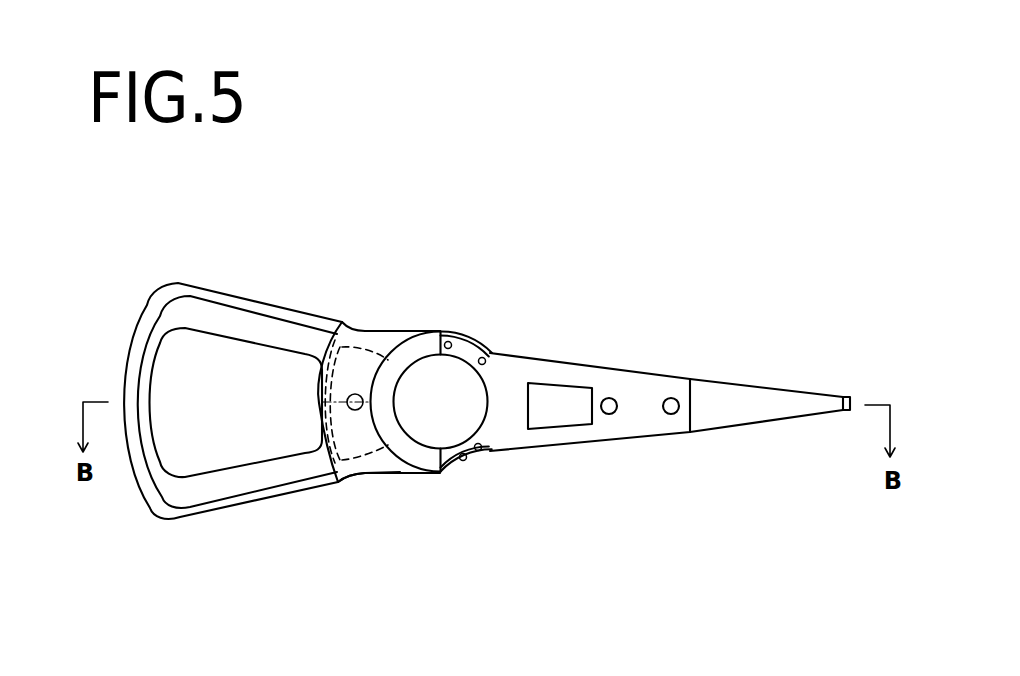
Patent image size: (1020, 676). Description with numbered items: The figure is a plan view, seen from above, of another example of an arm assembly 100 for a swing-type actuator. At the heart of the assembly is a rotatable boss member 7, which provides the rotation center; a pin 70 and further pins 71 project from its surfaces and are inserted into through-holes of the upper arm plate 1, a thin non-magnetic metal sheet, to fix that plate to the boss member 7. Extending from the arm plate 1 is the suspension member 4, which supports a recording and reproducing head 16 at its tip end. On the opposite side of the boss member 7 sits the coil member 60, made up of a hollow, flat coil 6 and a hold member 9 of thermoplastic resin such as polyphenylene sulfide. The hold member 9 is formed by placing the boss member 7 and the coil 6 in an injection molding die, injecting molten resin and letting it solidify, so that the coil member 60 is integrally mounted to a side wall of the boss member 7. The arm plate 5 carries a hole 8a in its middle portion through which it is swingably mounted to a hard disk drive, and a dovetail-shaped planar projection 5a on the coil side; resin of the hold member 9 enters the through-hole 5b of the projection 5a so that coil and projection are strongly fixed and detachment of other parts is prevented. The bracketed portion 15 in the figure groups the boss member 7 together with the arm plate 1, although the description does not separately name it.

The arm assembly 100 is at (610, 314).
The coil member 60 is at (197, 613).
The hollow coil 6 is at (162, 515).
The hold member 9 is at (215, 500).
The arm plate 5 is at (379, 406).
The dovetail-shaped projection 5a is at (360, 443).
The through-hole 5b is at (353, 393).
The arm assembly 15 is at (510, 578).
The boss member 7 is at (461, 414).
The pin 70 is at (437, 331).
The hole 8a is at (438, 385).
The pins 71 is at (486, 359).
The upper arm plate 1 is at (695, 437).
The suspension member 4 is at (753, 395).
The recording and reproducing head 16 is at (845, 395).